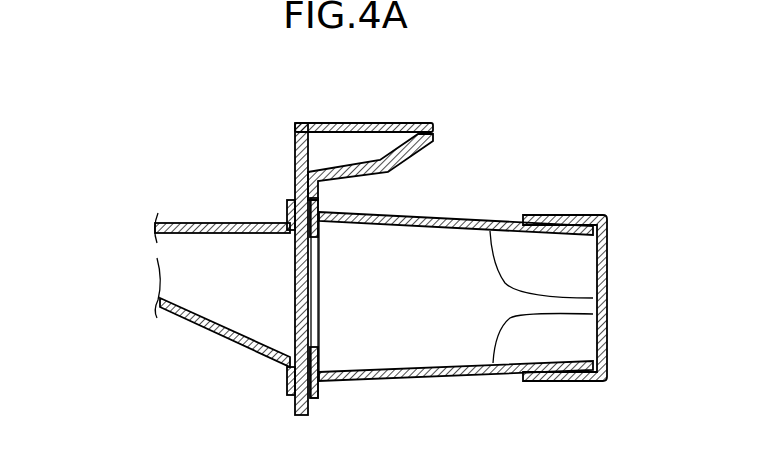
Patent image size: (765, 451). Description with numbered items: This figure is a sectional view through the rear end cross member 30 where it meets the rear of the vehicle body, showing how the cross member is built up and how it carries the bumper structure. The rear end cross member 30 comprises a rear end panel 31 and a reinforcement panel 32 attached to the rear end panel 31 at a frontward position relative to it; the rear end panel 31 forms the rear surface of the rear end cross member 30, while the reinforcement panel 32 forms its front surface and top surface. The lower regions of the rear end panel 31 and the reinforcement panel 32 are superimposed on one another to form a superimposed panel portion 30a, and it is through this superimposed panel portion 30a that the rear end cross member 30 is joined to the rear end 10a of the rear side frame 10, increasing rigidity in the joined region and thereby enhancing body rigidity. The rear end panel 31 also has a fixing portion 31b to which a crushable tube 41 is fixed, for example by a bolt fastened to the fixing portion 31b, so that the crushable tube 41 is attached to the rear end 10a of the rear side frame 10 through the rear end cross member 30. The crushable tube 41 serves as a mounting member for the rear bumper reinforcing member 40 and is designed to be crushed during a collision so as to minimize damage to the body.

The rear side frame 10 is at (110, 223).
The rear end 10a is at (287, 213).
The rear end cross member 30 is at (474, 72).
The superimposed panel portion 30a is at (333, 188).
The rear end panel 31 is at (387, 161).
The fixing portion 31b is at (318, 323).
The reinforcement panel 32 is at (315, 123).
The rear bumper reinforcing member 40 is at (607, 278).
The crushable tube 41 is at (597, 300).